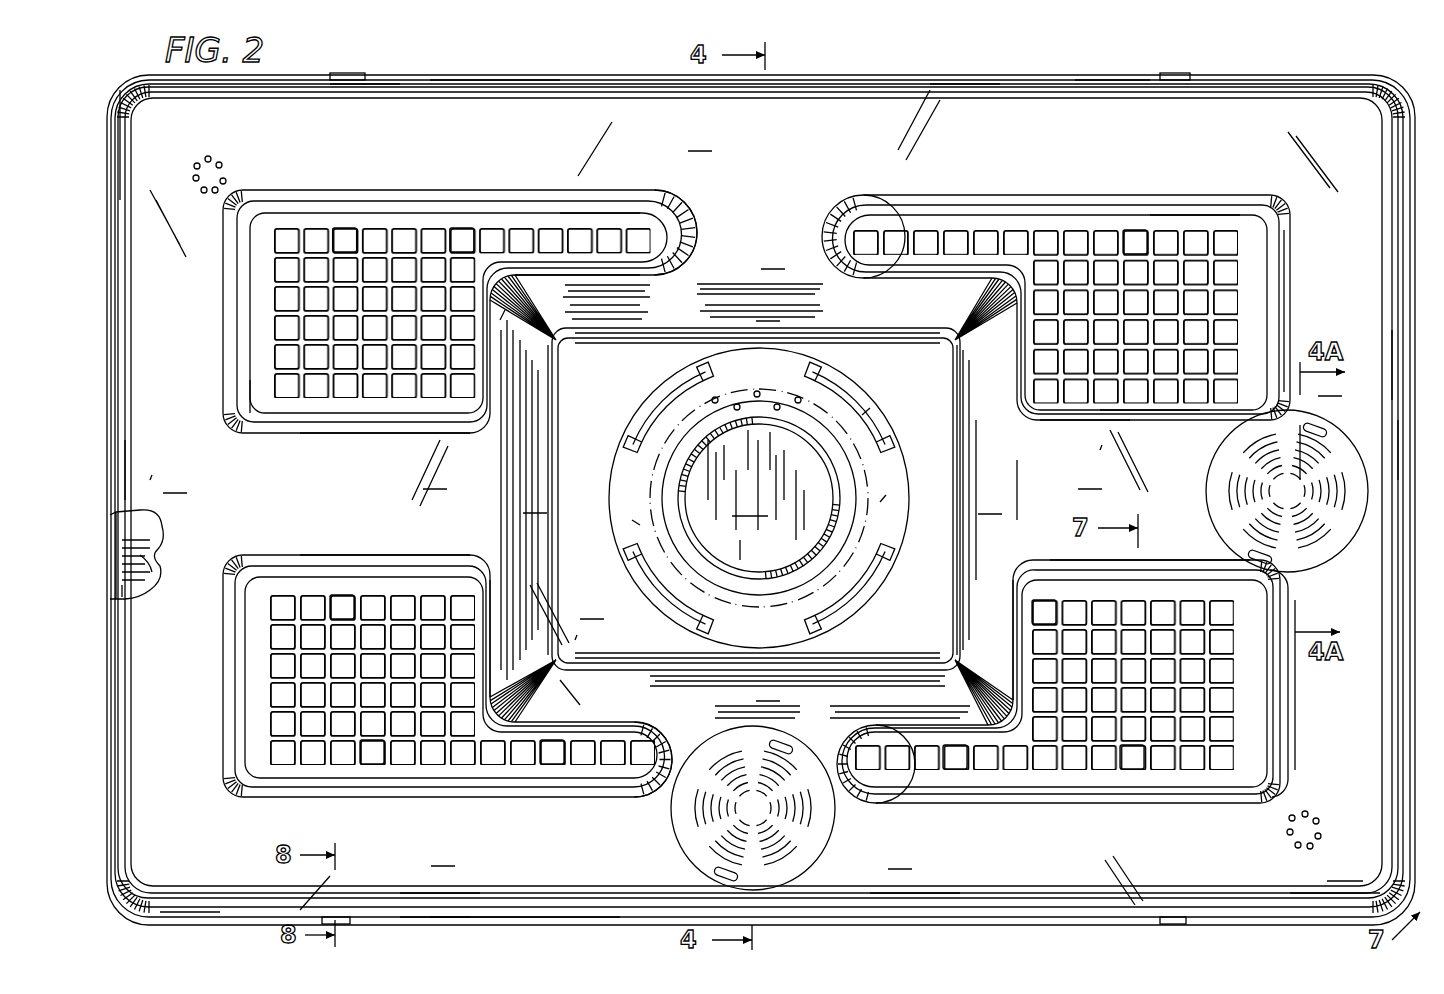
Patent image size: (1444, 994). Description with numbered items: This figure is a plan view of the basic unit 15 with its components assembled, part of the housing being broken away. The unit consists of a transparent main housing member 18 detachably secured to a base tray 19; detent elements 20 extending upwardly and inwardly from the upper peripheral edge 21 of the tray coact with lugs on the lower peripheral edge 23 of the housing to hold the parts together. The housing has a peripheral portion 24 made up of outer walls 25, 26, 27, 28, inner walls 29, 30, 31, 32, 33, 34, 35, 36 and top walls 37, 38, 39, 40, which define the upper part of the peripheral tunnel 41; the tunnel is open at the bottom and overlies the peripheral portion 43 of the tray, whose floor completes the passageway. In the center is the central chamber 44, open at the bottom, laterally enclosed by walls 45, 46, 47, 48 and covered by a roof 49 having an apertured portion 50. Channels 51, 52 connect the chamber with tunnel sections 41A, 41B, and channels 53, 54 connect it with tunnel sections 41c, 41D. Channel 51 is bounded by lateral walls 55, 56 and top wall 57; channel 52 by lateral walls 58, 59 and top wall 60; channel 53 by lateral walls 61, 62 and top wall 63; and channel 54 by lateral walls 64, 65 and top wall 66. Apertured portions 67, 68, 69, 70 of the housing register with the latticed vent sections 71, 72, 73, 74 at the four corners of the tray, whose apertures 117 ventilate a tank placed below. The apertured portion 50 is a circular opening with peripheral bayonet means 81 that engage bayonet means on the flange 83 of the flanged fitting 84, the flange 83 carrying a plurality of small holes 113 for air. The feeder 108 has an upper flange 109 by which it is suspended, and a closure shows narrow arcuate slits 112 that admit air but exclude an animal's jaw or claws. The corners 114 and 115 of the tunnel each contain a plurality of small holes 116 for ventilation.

The basic unit 15 is at (850, 72).
The main housing member 18 is at (455, 866).
The base tray 19 is at (150, 552).
The detent elements 20 is at (347, 74).
The upper peripheral edge 21 is at (460, 68).
The lower peripheral edge 23 is at (1105, 78).
The peripheral portion 24 is at (585, 125).
The outer wall 25 is at (132, 490).
The outer wall 26 is at (990, 95).
The outer wall 27 is at (1390, 455).
The outer wall 28 is at (445, 918).
The inner wall 29 is at (225, 658).
The inner wall 30 is at (223, 335).
The inner wall 31 is at (428, 200).
The inner wall 32 is at (975, 205).
The inner wall 33 is at (1283, 312).
The inner wall 34 is at (1280, 683).
The inner wall 35 is at (1065, 805).
The inner wall 36 is at (470, 800).
The top wall 37 is at (187, 493).
The top wall 38 is at (712, 151).
The top wall 39 is at (1342, 396).
The top wall 40 is at (912, 869).
The peripheral tunnel 41 is at (150, 570).
The tunnel section 41A is at (150, 185).
The tunnel section 41B is at (1370, 368).
The tunnel section 41c is at (595, 905).
The tunnel section 41D is at (935, 100).
The peripheral portion of the tray 43 is at (135, 597).
The central chamber 44 is at (950, 570).
The wall 45 is at (547, 513).
The wall 46 is at (780, 321).
The wall 47 is at (1002, 514).
The wall 48 is at (780, 701).
The roof 49 is at (604, 619).
The apertured portion 50 is at (632, 518).
The channel 51 is at (495, 540).
The channel 52 is at (1015, 482).
The channel 53 is at (700, 725).
The channel 54 is at (700, 290).
The lateral wall 55 is at (395, 565).
The lateral wall 56 is at (370, 433).
The top wall 57 is at (447, 489).
The lateral wall 58 is at (1170, 572).
The lateral wall 59 is at (1130, 422).
The top wall 60 is at (1102, 489).
The lateral wall 61 is at (835, 745).
The lateral wall 62 is at (665, 732).
The top wall 63 is at (830, 745).
The lateral wall 64 is at (860, 205).
The lateral wall 65 is at (700, 242).
The top wall 66 is at (785, 269).
The apertured portion 67 is at (555, 210).
The apertured portion 68 is at (1150, 215).
The apertured portion 69 is at (1050, 600).
The apertured portion 70 is at (345, 600).
The latticed vent section 71 is at (345, 235).
The latticed vent section 72 is at (1125, 240).
The latticed vent section 73 is at (1115, 770).
The latticed vent section 74 is at (555, 765).
The peripheral bayonet means 81 is at (872, 422).
The flange 83 is at (780, 392).
The flanged fitting 84 is at (890, 487).
The feeder 108 is at (675, 474).
The upper flange 109 is at (768, 516).
The arcuate slits 112 is at (790, 820).
The small holes 113 is at (757, 392).
The corner 114 is at (1363, 881).
The corner 115 is at (175, 140).
The small holes 116 is at (222, 163).
The apertures 117 is at (460, 240).